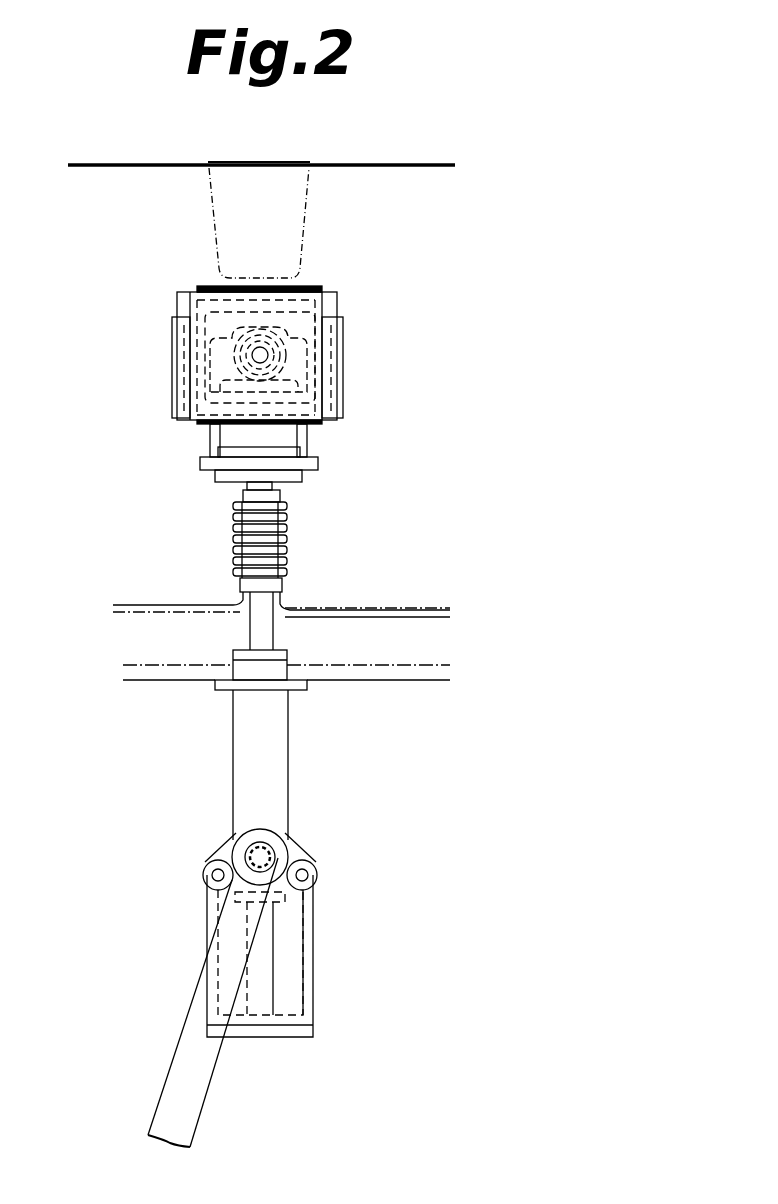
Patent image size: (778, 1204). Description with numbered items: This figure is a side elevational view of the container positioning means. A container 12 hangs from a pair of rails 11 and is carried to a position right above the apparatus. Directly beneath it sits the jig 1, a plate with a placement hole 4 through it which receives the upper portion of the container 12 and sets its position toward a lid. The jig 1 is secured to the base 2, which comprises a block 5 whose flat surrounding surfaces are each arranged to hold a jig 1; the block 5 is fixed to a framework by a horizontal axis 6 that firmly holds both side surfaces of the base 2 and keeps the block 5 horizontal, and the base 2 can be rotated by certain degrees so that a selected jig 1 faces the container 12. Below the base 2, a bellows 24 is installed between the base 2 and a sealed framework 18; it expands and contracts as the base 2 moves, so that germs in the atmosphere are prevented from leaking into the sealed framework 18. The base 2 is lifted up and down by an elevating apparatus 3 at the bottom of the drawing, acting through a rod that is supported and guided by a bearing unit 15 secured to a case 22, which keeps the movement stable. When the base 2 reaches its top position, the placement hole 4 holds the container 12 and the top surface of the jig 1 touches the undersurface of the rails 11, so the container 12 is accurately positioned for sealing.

The jig 1 is at (300, 287).
The base 2 is at (357, 412).
The elevating apparatus 3 is at (195, 1020).
The placement hole 4 is at (213, 287).
The block 5 is at (318, 312).
The horizontal axis 6 is at (275, 358).
The rails 11 is at (360, 165).
The container 12 is at (305, 218).
The bearing unit 15 is at (282, 760).
The sealed framework 18 is at (165, 607).
The case 22 is at (143, 682).
The bellows 24 is at (287, 546).